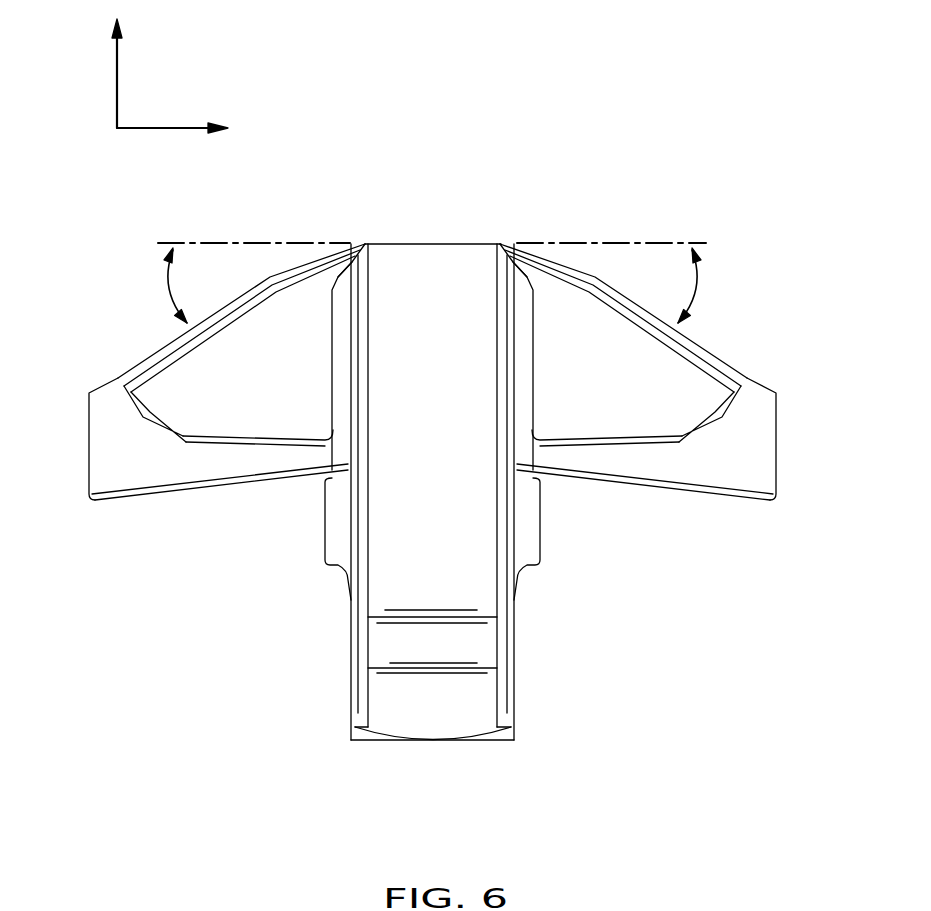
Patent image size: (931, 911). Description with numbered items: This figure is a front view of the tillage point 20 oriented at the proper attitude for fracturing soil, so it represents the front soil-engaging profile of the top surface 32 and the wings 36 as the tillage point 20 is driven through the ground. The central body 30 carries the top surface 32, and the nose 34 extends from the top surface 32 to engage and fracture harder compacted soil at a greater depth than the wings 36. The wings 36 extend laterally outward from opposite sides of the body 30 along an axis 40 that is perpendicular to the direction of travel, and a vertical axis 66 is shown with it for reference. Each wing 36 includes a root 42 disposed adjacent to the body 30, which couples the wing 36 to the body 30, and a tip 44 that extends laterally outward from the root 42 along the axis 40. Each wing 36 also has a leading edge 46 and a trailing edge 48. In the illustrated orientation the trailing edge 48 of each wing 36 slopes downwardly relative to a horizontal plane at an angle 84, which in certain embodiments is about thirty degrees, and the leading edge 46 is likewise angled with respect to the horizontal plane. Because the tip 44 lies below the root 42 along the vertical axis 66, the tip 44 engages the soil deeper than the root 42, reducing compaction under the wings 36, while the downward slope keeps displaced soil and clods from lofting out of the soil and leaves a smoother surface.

The tillage point 20 is at (242, 638).
The body 30 is at (515, 677).
The top surface 32 is at (472, 592).
The nose 34 is at (472, 743).
The wings 36 is at (150, 403).
The axis 40 is at (165, 130).
The root 42 is at (355, 307).
The tip 44 is at (89, 438).
The leading edge 46 is at (212, 487).
The trailing edge 48 is at (153, 352).
The vertical axis 66 is at (117, 82).
The angle 84 is at (170, 292).